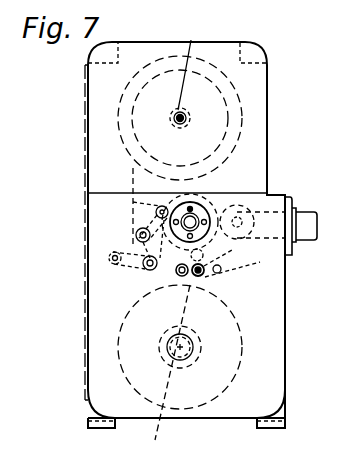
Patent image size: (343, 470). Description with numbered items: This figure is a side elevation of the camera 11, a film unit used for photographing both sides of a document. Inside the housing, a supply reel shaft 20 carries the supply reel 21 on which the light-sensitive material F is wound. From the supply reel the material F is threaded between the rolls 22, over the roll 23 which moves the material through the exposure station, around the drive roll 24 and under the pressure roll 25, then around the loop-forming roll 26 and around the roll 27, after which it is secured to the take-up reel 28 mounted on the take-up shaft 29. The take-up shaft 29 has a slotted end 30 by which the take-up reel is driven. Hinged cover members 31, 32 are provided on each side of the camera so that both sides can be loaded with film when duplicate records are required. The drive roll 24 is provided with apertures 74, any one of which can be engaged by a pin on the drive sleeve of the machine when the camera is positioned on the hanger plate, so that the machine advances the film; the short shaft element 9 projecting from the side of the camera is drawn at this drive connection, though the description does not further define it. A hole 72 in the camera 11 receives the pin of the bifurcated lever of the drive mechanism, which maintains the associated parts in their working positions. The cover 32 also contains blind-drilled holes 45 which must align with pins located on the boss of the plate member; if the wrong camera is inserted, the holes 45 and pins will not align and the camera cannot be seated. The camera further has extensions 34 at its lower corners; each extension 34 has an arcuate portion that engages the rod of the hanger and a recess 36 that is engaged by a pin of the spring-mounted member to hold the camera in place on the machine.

The drive shaft 9 is at (310, 226).
The camera 11 is at (286, 366).
The supply reel shaft 20 is at (171, 371).
The supply reel 21 is at (242, 332).
The rolls 22 is at (221, 278).
The roll 23 is at (250, 220).
The drive roll 24 is at (200, 206).
The pressure roll 25 is at (133, 207).
The loop-forming roll 26 is at (146, 271).
The roll 27 is at (134, 230).
The take-up reel 28 is at (245, 101).
The take-up shaft 29 is at (189, 64).
The slotted end 30 is at (180, 125).
The hinged cover member 31 is at (252, 77).
The hinged cover member 32 is at (278, 284).
The extension 34 is at (89, 409).
The recess 36 is at (258, 52).
The holes 45 is at (196, 277).
The hole 72 is at (221, 268).
The apertures 74 is at (185, 205).
The light-sensitive material F is at (133, 172).